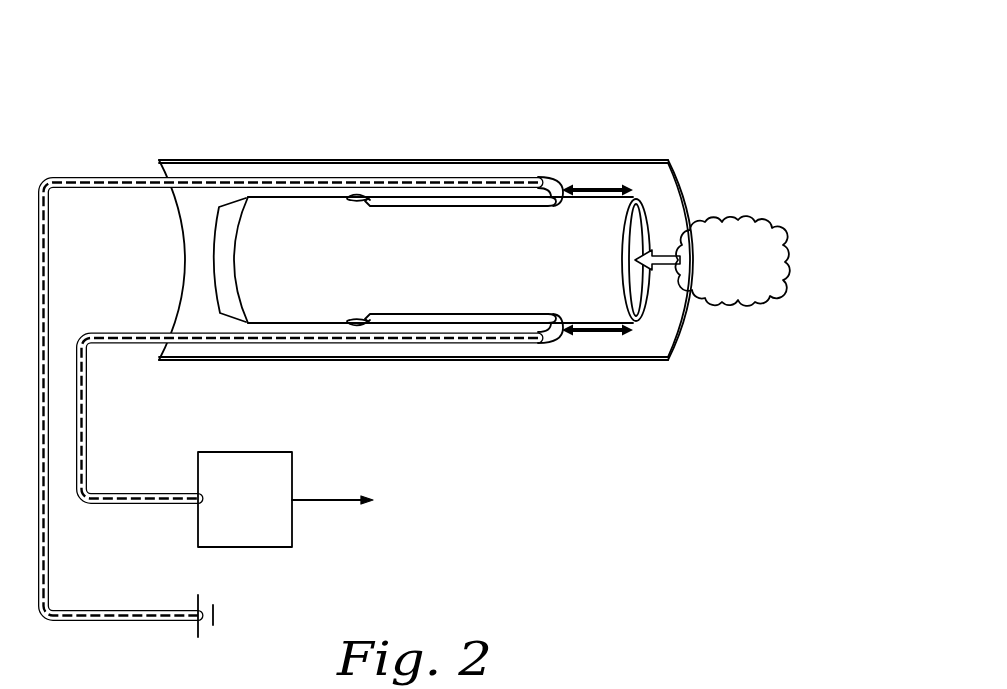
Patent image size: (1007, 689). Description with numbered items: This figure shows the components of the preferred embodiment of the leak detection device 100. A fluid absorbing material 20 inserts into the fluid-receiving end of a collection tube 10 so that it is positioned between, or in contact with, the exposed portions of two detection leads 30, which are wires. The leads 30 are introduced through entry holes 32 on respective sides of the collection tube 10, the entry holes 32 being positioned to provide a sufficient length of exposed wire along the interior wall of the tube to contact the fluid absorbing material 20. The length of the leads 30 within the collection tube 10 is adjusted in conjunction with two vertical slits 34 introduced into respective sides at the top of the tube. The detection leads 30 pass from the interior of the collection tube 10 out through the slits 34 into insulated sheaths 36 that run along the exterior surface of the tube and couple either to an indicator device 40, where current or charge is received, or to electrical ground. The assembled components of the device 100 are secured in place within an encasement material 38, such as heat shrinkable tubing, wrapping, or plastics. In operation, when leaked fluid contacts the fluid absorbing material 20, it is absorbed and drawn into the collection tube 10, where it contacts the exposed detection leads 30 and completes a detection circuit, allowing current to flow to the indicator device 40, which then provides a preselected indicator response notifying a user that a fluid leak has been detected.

The leak detection device 100 is at (709, 82).
The collection tube 10 is at (322, 271).
The fluid absorbing material 20 is at (770, 240).
The detection leads 30 is at (549, 188).
The entry holes 32 is at (364, 197).
The slits 34 is at (637, 201).
The insulated sheaths 36 is at (447, 177).
The encasement material 38 is at (689, 329).
The indicator device 40 is at (223, 515).